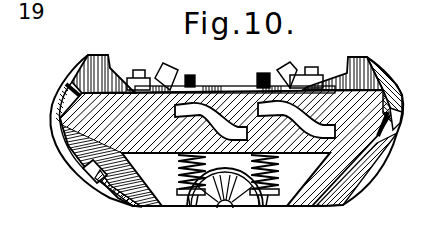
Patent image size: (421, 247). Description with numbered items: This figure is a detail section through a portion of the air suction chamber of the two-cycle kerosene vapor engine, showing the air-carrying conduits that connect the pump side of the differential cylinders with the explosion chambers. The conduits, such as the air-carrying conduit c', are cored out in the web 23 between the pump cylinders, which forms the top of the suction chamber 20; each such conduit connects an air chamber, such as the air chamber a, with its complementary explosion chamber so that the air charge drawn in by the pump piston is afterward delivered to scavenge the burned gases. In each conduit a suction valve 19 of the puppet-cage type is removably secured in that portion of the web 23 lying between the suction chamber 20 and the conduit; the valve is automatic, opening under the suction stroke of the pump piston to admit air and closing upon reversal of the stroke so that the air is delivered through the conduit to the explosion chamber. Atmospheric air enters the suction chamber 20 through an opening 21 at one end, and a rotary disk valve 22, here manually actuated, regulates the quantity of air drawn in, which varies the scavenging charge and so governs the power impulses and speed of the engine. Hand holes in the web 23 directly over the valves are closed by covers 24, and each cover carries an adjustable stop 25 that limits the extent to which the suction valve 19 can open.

The suction valve 19 is at (178, 166).
The suction chamber 20 is at (282, 174).
The opening 21 is at (197, 204).
The rotary disk valve 22 is at (248, 198).
The web 23 is at (110, 107).
The cover 24 is at (242, 85).
The adjustable stop 25 is at (188, 74).
The air chamber a is at (180, 113).
The air-carrying conduit c' is at (304, 78).